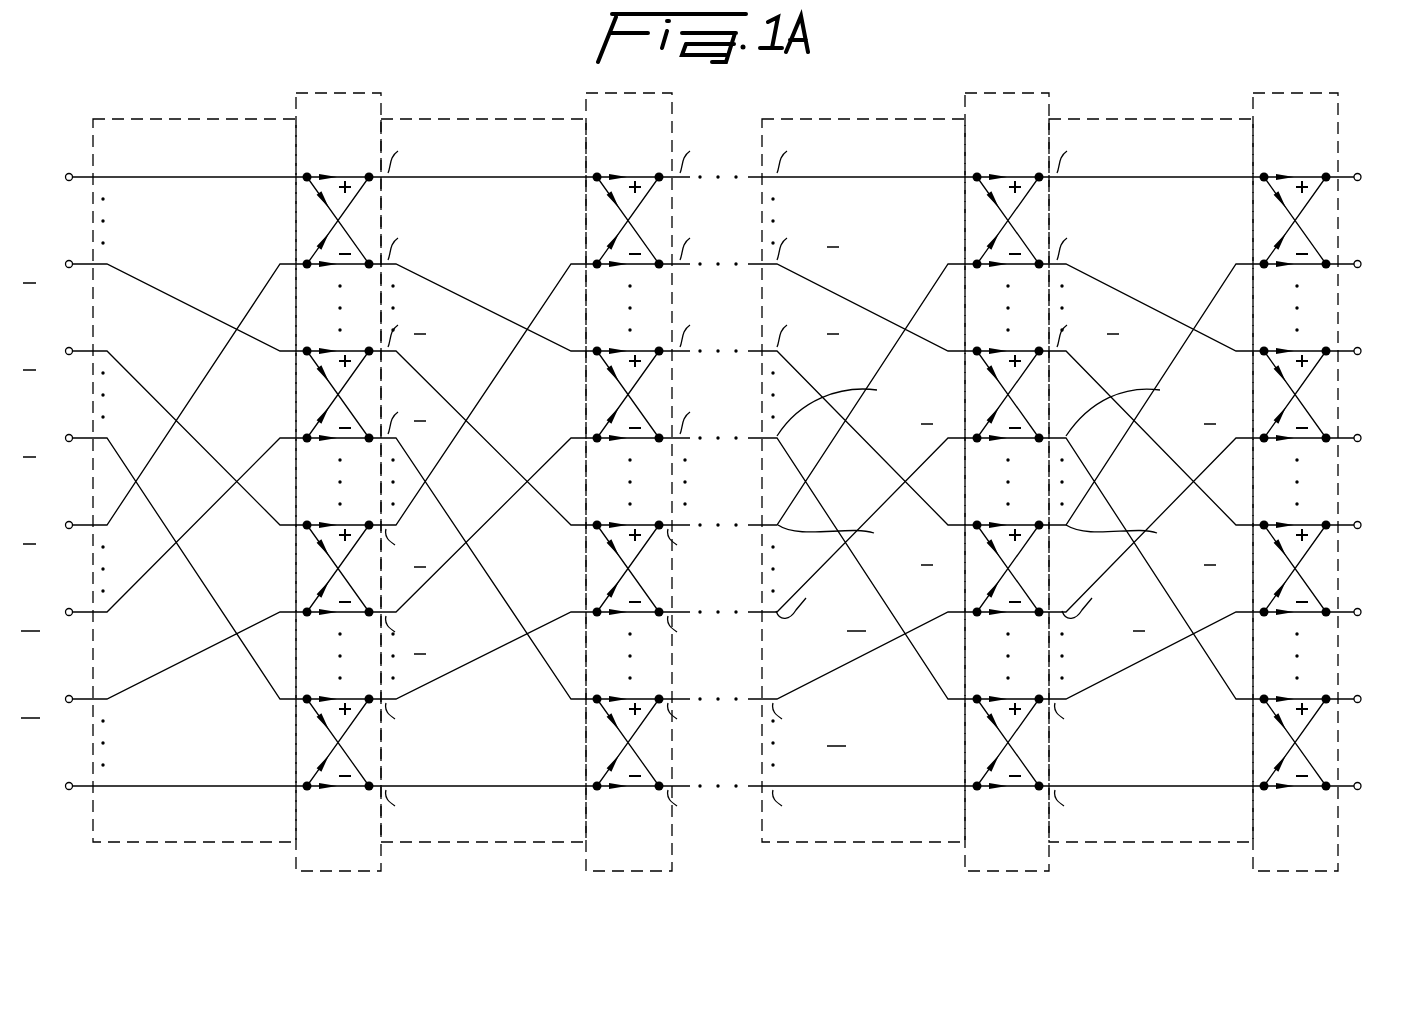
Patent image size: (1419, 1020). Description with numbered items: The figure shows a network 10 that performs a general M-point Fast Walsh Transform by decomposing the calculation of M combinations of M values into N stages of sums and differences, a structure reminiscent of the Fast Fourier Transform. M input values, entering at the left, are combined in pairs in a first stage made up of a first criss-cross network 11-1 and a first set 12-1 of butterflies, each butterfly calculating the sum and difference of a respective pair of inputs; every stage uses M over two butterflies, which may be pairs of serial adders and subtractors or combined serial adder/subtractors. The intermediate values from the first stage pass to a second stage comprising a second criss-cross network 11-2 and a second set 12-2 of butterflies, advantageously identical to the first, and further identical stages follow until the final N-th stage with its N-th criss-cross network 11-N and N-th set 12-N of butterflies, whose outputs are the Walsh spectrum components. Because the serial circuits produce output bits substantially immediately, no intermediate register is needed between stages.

The network 10 is at (250, 858).
The first criss-cross network 11-1 is at (122, 846).
The first set of butterflies 12-1 is at (322, 874).
The second criss-cross network 11-2 is at (438, 846).
The second set of butterflies 12-2 is at (612, 874).
The N-th criss-cross network 11-N is at (1108, 846).
The N-th set of butterflies 12-N is at (1272, 874).